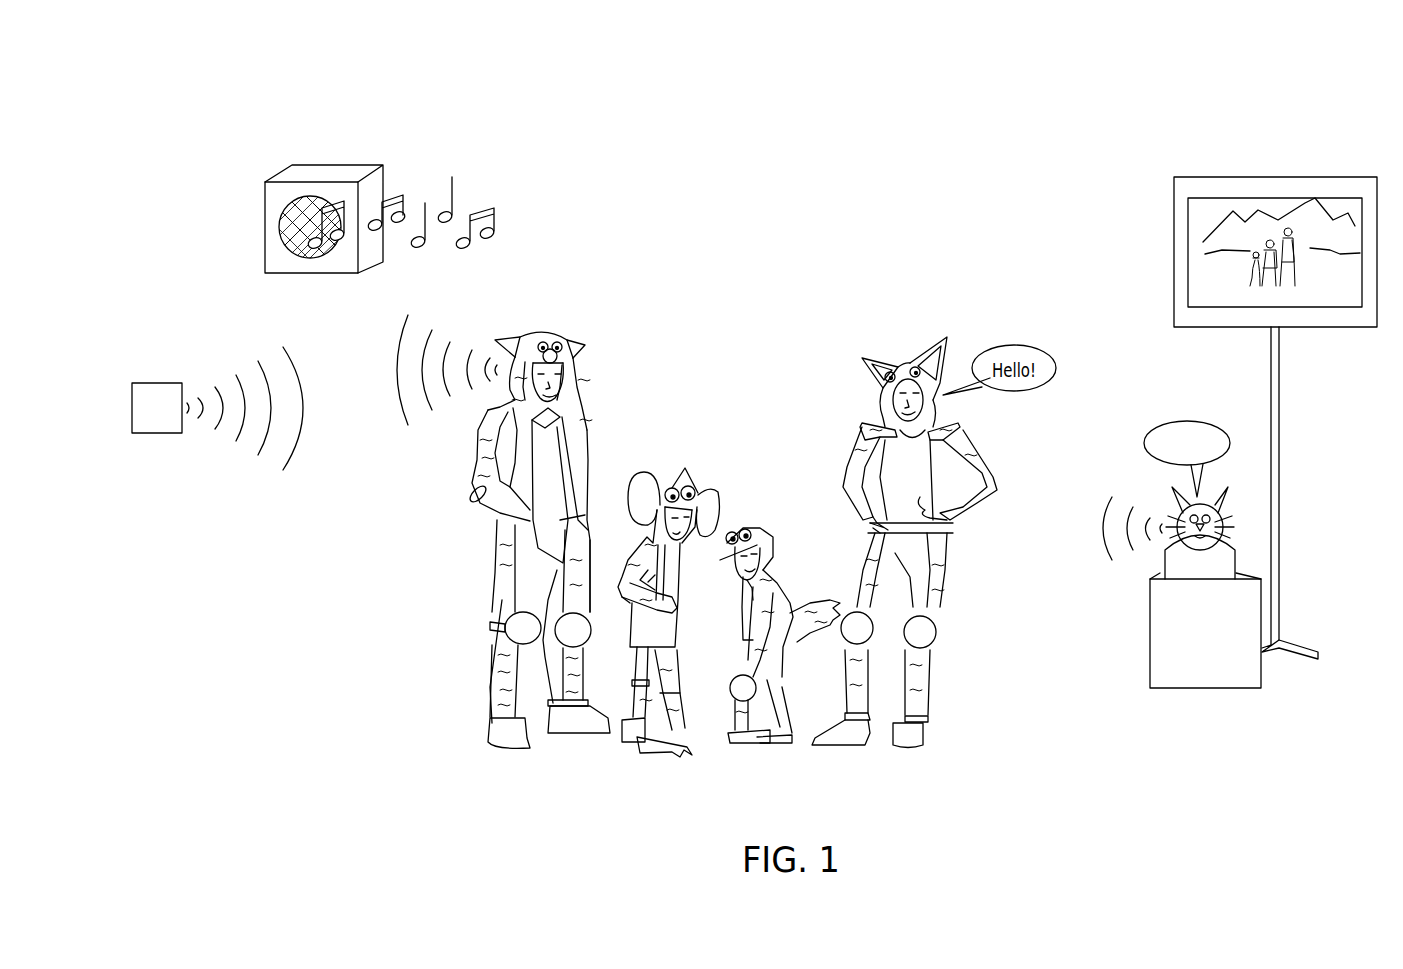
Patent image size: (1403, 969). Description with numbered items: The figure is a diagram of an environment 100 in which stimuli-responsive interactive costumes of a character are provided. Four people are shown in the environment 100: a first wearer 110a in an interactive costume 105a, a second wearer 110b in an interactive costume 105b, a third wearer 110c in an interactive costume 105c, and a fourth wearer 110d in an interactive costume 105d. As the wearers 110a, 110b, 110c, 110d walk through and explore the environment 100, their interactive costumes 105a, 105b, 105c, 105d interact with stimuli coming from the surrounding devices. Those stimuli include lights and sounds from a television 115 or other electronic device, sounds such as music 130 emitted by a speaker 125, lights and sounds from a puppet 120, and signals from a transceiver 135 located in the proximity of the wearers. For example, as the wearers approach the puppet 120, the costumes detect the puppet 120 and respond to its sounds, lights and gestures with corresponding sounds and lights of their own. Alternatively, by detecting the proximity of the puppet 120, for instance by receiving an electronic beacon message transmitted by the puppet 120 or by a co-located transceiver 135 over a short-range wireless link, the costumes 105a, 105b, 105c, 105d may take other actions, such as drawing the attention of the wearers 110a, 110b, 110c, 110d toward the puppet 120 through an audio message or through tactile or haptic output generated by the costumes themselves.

The environment 100 is at (211, 122).
The speaker 125 is at (333, 164).
The music 130 is at (488, 206).
The transceiver 135 is at (158, 382).
The interactive costume 105a is at (556, 325).
The wearer 110a is at (593, 473).
The interactive costume 105b is at (690, 478).
The wearer 110b is at (680, 598).
The interactive costume 105c is at (767, 527).
The wearer 110c is at (760, 745).
The interactive costume 105d is at (877, 356).
The wearer 110d is at (963, 463).
The television 115 is at (1174, 268).
The puppet 120 is at (1172, 487).